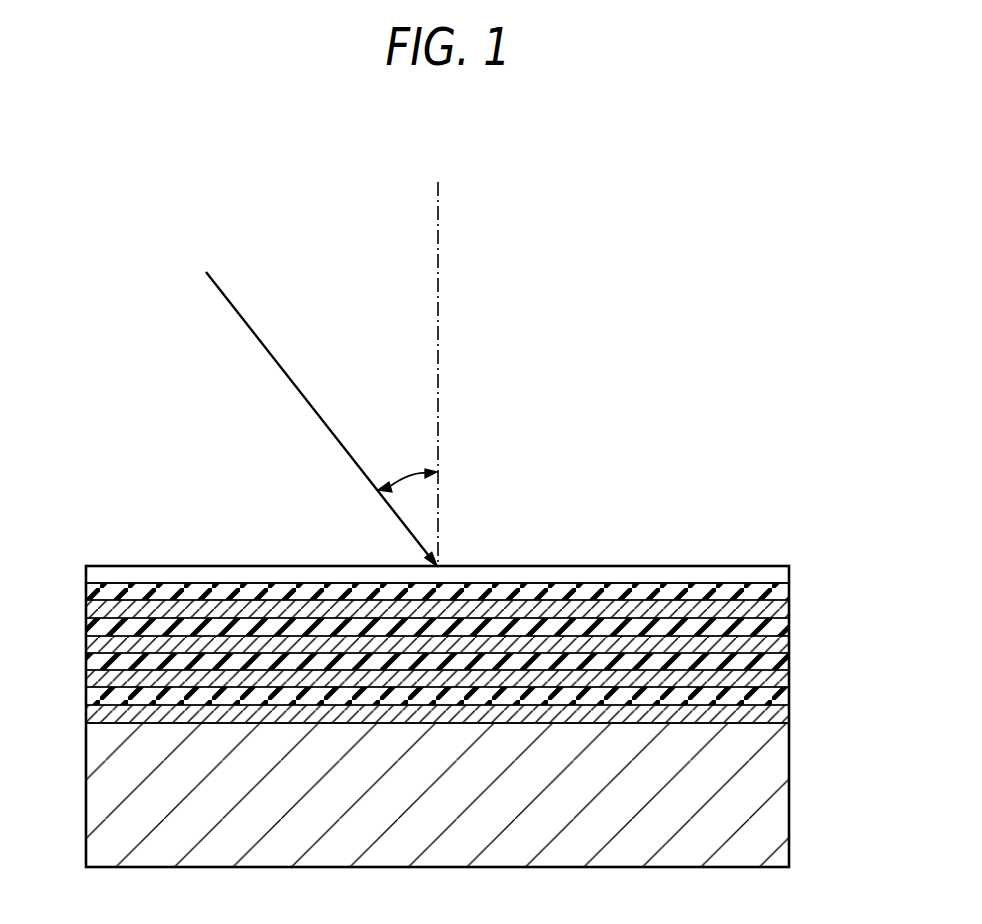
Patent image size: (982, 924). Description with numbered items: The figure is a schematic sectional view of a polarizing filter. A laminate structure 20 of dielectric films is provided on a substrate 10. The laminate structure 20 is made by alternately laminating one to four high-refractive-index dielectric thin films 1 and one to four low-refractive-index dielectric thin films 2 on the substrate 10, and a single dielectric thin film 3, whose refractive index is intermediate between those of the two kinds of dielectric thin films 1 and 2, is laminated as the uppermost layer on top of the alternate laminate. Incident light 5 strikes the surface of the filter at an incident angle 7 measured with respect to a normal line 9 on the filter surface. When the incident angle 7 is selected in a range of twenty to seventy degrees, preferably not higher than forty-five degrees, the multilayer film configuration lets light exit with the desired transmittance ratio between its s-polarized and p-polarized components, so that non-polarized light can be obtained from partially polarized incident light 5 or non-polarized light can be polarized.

The high-refractive-index dielectric thin film 1 is at (806, 714).
The low-refractive-index dielectric thin film 2 is at (806, 697).
The dielectric thin film 3 is at (791, 569).
The incident light 5 is at (227, 298).
The incident angle 7 is at (405, 478).
The normal line 9 is at (439, 228).
The substrate 10 is at (790, 790).
The laminate structure 20 is at (67, 567).